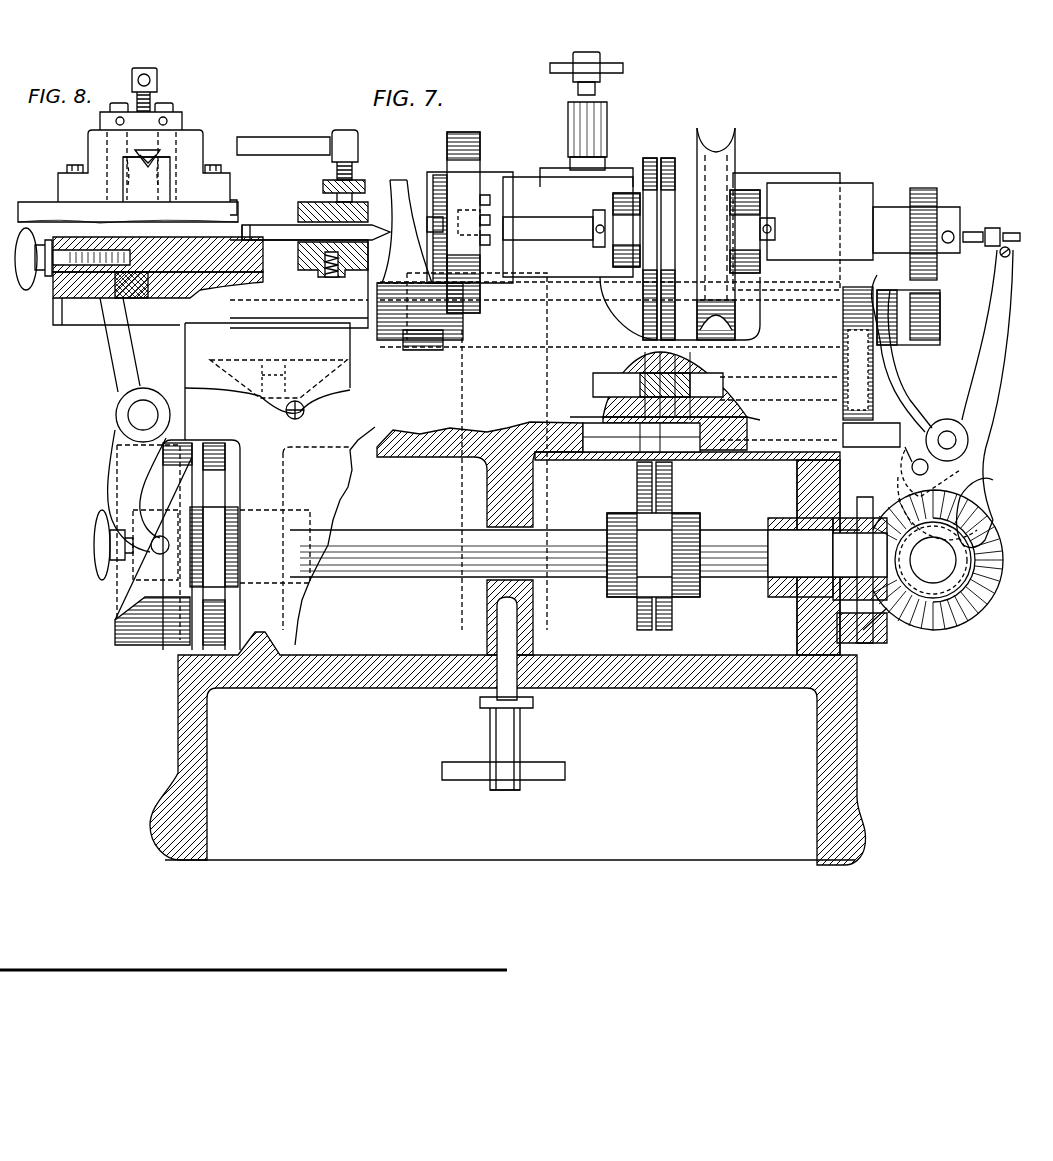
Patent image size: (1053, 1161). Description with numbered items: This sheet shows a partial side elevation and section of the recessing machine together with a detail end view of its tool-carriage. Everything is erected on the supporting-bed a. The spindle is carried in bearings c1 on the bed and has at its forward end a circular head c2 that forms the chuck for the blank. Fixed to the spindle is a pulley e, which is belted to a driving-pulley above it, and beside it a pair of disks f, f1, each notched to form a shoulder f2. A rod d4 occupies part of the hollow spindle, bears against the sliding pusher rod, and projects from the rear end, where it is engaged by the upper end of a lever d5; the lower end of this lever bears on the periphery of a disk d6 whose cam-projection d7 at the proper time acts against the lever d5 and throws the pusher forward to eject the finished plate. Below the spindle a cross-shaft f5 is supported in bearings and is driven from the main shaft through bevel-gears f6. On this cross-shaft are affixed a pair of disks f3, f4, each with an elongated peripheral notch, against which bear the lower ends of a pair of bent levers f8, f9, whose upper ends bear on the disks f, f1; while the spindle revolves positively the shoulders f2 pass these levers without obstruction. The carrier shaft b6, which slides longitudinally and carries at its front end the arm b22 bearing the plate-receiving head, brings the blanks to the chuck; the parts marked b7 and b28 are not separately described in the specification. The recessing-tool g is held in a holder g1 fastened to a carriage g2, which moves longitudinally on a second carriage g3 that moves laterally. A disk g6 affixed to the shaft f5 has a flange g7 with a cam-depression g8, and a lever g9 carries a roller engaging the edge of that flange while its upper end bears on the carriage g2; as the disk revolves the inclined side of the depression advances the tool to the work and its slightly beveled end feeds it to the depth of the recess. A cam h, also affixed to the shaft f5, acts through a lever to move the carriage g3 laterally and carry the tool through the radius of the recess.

In FIG. 7, the supporting-bed a is at (752, 688).
In FIG. 7, the shaft b6 is at (913, 313).
In FIG. 7, the pinion b7 is at (925, 337).
In FIG. 7, the arm b22 is at (437, 345).
In FIG. 7, the pivot stud b28 is at (920, 410).
In FIG. 7, the bearings c1 is at (640, 300).
In FIG. 7, the circular head c2 is at (470, 150).
In FIG. 7, the rod d4 is at (970, 230).
In FIG. 7, the lever d5 is at (928, 385).
In FIG. 7, the disk d6 is at (940, 598).
In FIG. 7, the cam-projection d7 is at (963, 537).
In FIG. 7, the pulley e is at (728, 167).
In FIG. 7, the disk f is at (652, 170).
In FIG. 7, the disk f1 is at (668, 165).
In FIG. 7, the shoulder f2 is at (700, 240).
In FIG. 7, the disk f3 is at (637, 620).
In FIG. 7, the disk f4 is at (673, 622).
In FIG. 7, the cross-shaft f5 is at (383, 535).
In FIG. 7, the bevel-gears f6 is at (918, 620).
In FIG. 7, the bent lever f8 is at (615, 342).
In FIG. 7, the bent lever f9 is at (690, 345).
In FIG. 8, the recessing-tool g is at (155, 155).
In FIG. 7, the recessing-tool g is at (278, 228).
In FIG. 8, the holder g1 is at (95, 158).
In FIG. 7, the holder g1 is at (365, 180).
In FIG. 8, the carriage g2 is at (45, 202).
In FIG. 7, the carriage g2 is at (55, 292).
In FIG. 7, the carriage g3 is at (267, 381).
In FIG. 7, the disk g6 is at (193, 443).
In FIG. 7, the flange g7 is at (150, 640).
In FIG. 7, the cam-depression g8 is at (133, 588).
In FIG. 7, the lever g9 is at (113, 400).
In FIG. 7, the cam h is at (218, 563).